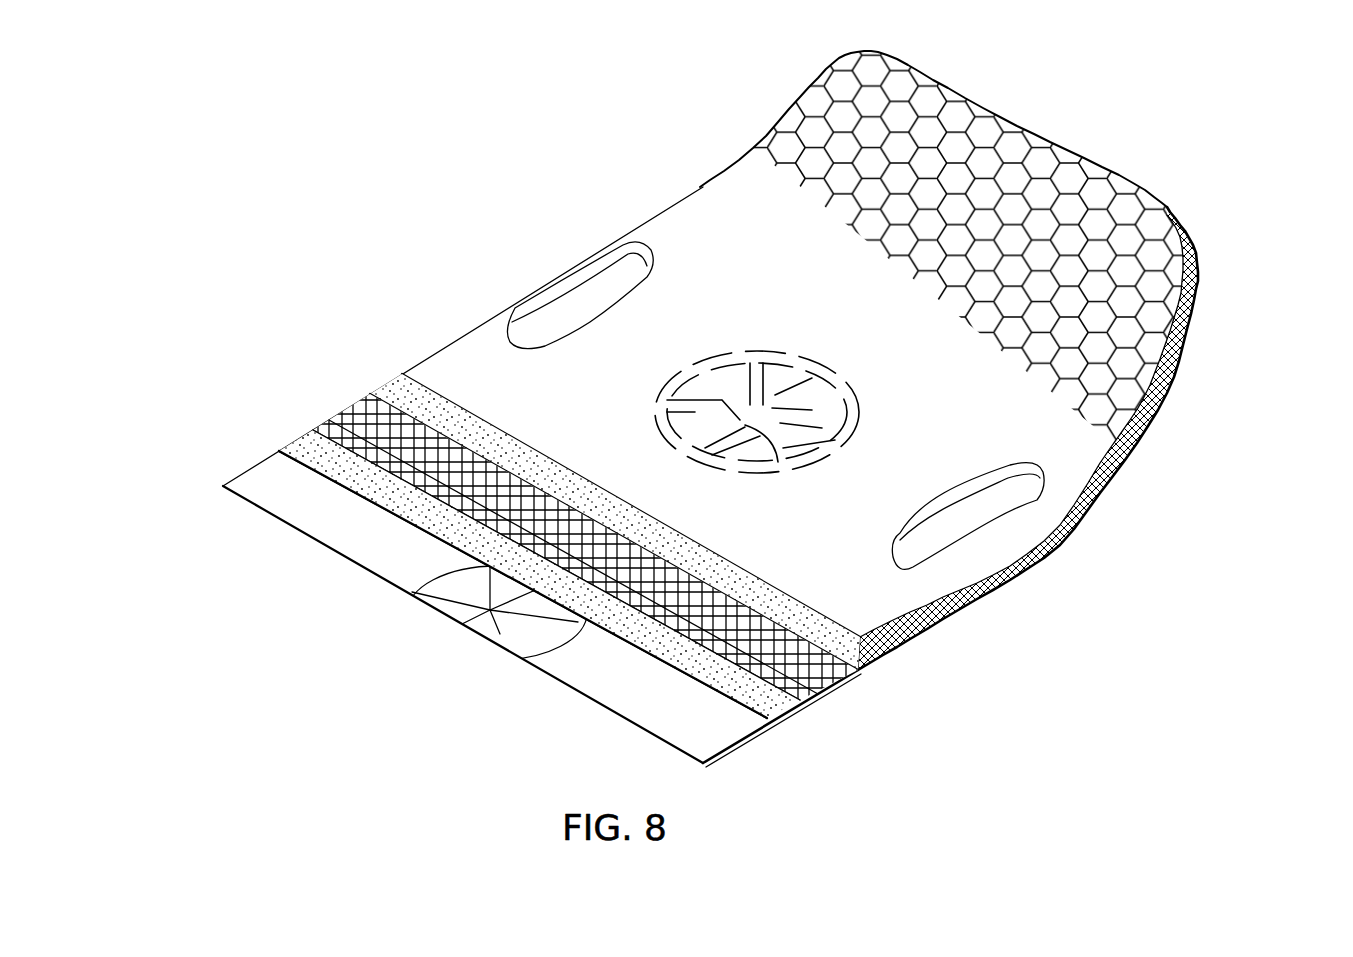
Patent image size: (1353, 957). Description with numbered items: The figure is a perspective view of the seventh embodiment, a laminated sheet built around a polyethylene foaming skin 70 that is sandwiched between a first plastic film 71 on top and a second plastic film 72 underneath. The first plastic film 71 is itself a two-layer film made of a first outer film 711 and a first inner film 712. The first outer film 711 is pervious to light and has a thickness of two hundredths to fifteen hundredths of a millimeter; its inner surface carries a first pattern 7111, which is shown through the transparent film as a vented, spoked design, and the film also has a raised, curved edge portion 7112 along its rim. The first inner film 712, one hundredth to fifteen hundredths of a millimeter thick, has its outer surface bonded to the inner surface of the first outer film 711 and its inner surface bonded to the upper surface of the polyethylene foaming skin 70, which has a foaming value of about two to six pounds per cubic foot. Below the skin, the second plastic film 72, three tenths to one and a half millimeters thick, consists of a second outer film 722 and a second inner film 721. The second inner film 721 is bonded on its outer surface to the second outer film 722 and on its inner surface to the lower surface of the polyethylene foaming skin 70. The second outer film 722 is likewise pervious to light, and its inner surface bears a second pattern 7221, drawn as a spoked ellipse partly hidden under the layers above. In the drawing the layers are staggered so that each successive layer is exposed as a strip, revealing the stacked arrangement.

The polyethylene foaming skin 70 is at (702, 409).
The first plastic film 71 is at (795, 409).
The first outer film 711 is at (848, 409).
The first pattern 7111 is at (744, 352).
The curved edge portion 7112 is at (1177, 323).
The first inner film 712 is at (387, 393).
The second plastic film 72 is at (426, 567).
The second inner film 721 is at (353, 420).
The second outer film 722 is at (429, 607).
The second pattern 7221 is at (430, 603).